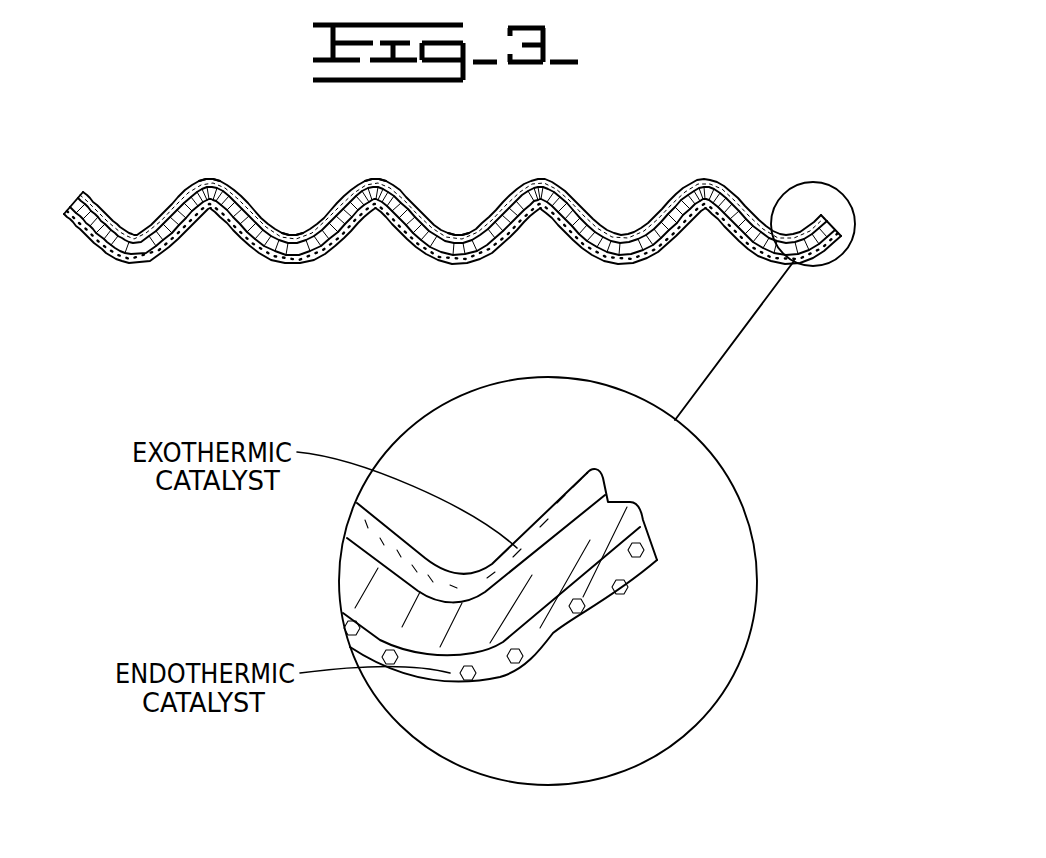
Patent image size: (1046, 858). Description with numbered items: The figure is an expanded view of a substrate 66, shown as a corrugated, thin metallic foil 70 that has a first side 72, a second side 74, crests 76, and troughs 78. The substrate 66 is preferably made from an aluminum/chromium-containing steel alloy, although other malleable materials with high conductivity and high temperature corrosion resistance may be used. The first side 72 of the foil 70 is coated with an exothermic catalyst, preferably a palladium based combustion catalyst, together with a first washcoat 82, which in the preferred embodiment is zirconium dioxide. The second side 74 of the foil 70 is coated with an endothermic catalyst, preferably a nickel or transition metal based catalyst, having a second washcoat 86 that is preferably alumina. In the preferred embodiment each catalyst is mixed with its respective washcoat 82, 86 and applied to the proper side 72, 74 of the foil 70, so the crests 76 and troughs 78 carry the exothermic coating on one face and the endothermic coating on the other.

The corrugated thin metallic foil 70 is at (717, 107).
The first side 72 is at (109, 212).
The second side 74 is at (127, 263).
The substrate 66 is at (270, 243).
The crests 76 is at (373, 178).
The troughs 78 is at (459, 264).
The first washcoat 82 is at (593, 485).
The second washcoat 86 is at (447, 682).